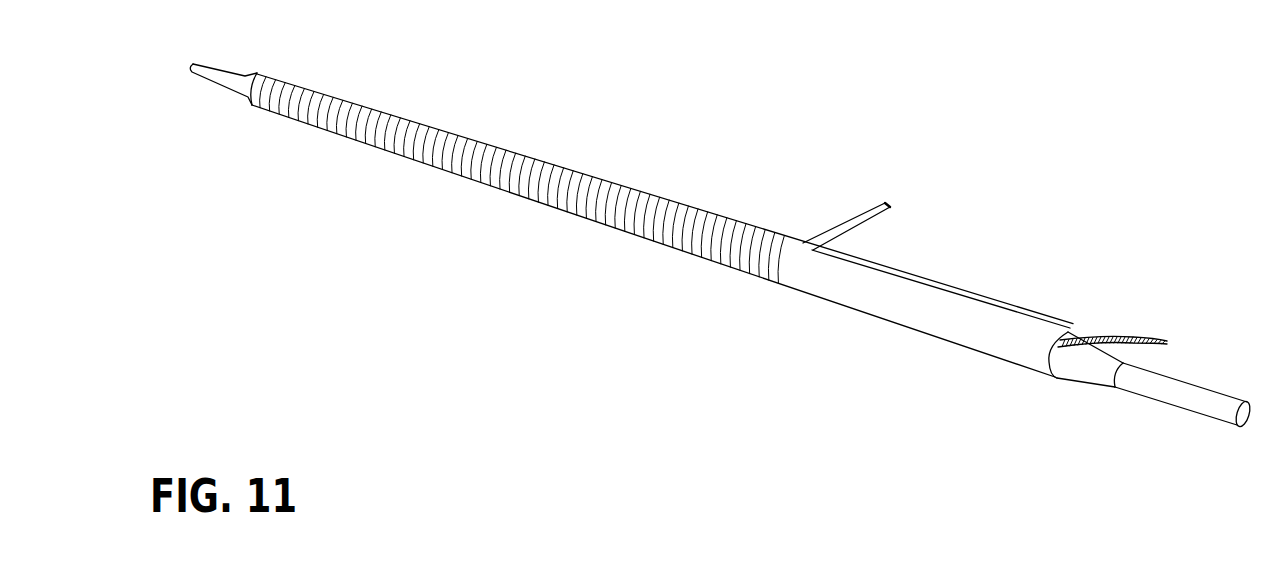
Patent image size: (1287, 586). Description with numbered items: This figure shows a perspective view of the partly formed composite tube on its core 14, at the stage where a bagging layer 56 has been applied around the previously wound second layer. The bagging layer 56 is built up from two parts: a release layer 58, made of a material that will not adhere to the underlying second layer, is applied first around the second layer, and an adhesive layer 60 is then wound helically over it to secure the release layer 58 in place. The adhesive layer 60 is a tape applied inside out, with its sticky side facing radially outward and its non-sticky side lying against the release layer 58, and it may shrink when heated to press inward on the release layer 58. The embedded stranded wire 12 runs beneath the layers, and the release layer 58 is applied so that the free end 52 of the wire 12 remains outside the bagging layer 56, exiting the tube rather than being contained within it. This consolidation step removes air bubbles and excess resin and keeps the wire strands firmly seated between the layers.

The stranded wire 12 is at (1128, 338).
The core 14 is at (336, 99).
The free end 52 is at (1098, 345).
The bagging layer 56 is at (665, 199).
The release layer 58 is at (938, 335).
The adhesive layer 60 is at (558, 167).